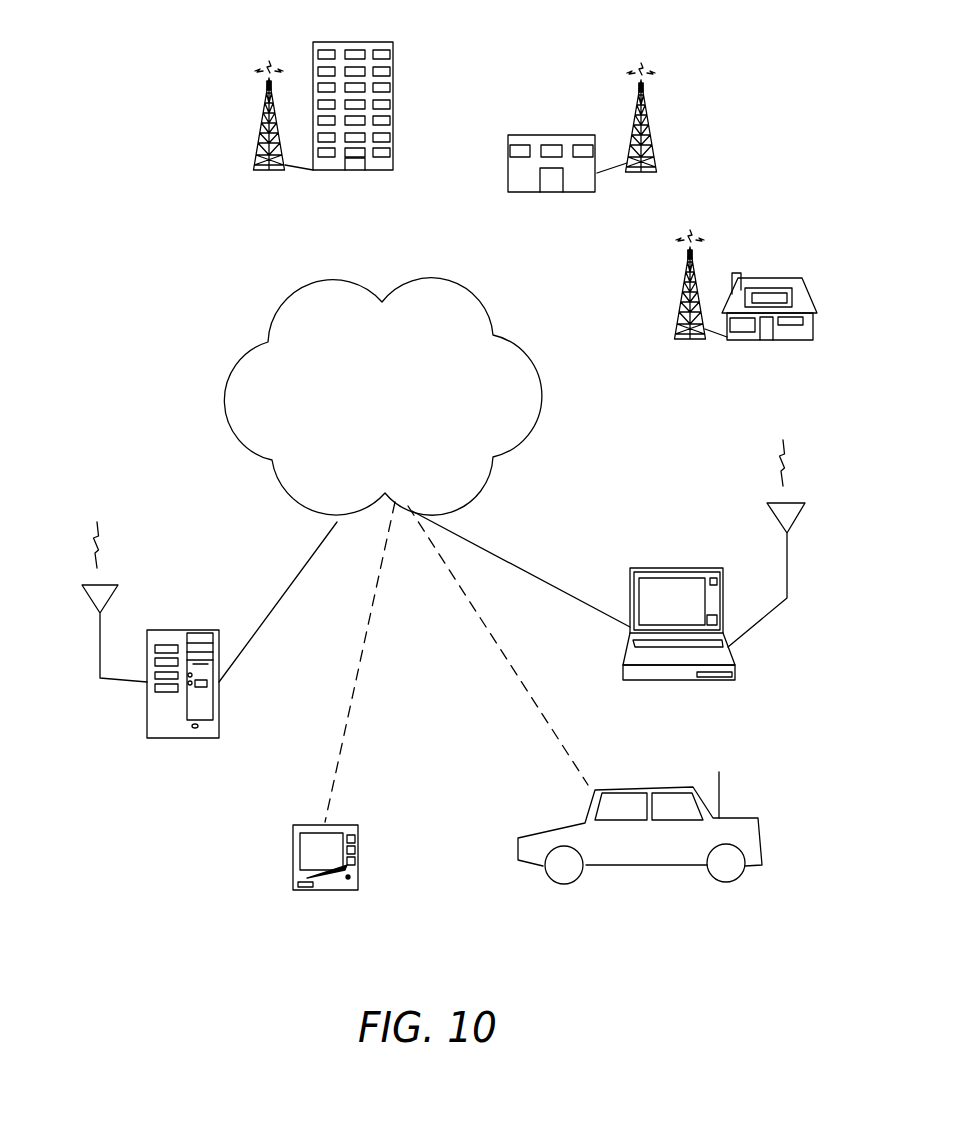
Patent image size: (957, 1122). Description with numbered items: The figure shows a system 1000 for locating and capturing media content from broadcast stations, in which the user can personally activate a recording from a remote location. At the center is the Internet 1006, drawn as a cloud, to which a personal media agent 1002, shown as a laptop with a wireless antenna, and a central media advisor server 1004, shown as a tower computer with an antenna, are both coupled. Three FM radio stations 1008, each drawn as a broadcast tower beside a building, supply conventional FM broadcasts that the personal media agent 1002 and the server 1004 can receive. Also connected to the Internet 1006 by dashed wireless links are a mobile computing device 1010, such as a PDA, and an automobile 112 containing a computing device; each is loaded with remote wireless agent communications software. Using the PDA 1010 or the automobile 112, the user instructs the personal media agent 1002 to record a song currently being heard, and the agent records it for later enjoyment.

The system 1000 is at (128, 255).
The personal media agent 1002 is at (680, 567).
The central media advisor server 1004 is at (183, 630).
The Internet 1006 is at (543, 397).
The FM radio stations 1008 is at (253, 93).
The mobile computing device 1010 is at (293, 857).
The vehicle 112 is at (765, 827).